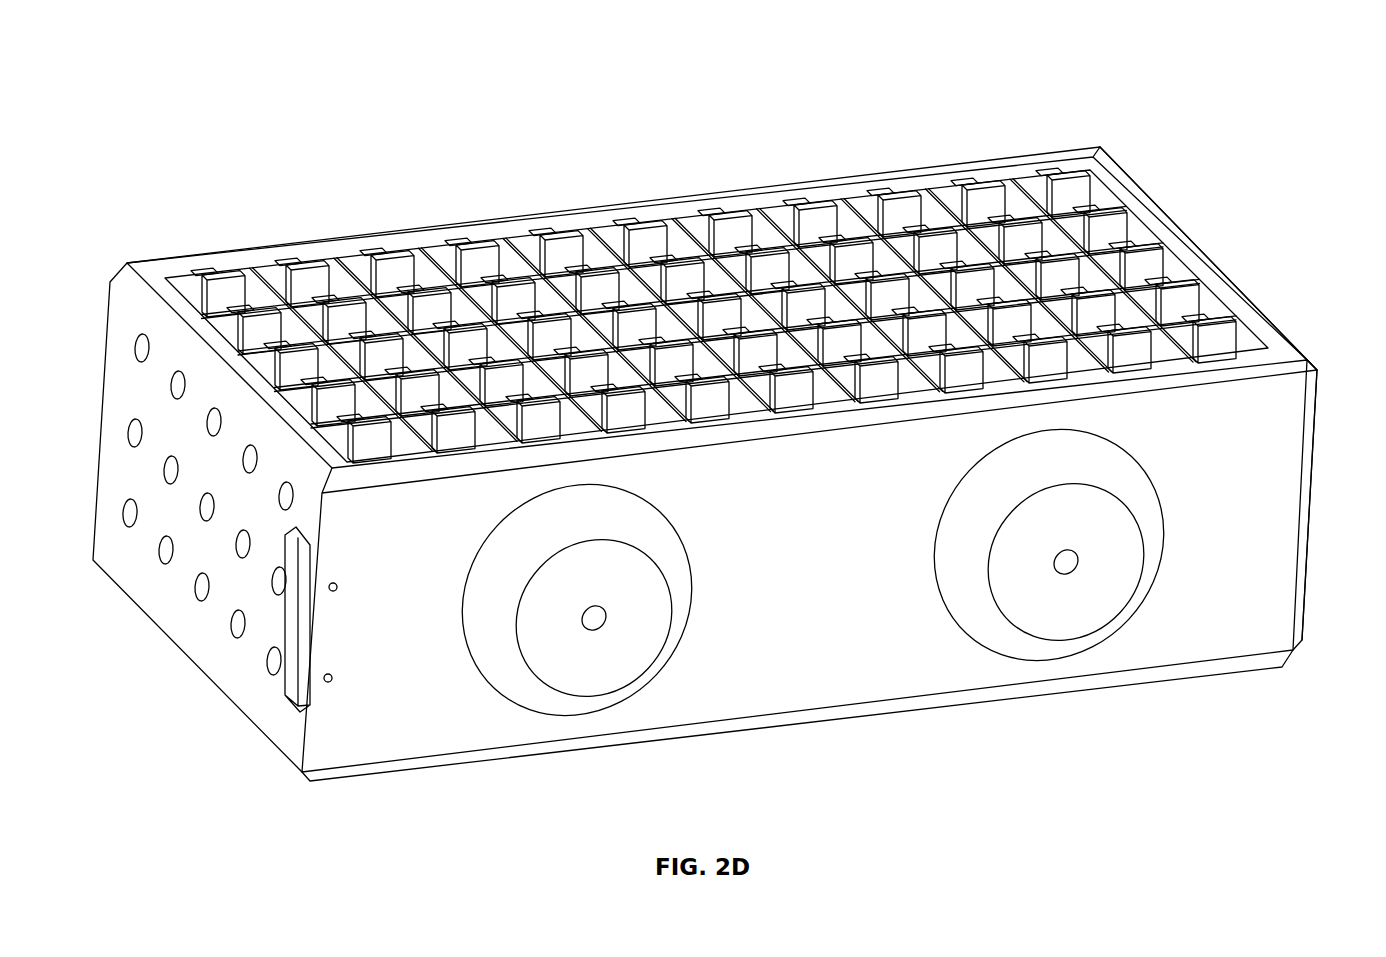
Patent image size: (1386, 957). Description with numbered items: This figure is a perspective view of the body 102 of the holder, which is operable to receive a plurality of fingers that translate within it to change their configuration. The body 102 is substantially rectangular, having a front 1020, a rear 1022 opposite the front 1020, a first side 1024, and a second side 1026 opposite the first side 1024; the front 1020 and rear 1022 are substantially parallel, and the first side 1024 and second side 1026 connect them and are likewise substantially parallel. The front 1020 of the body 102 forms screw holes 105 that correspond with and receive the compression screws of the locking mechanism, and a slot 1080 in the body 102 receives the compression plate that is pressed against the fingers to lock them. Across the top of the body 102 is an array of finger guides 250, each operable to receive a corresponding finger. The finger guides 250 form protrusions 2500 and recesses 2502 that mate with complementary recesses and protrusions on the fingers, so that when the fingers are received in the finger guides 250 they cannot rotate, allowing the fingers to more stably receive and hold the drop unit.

The body 102 is at (1240, 245).
The screw holes 105 is at (606, 619).
The finger guides 250 is at (568, 245).
The protrusions 2500 is at (958, 190).
The recesses 2502 is at (1045, 110).
The front 1020 is at (1270, 566).
The rear 1022 is at (357, 235).
The first side 1024 is at (125, 378).
The second side 1026 is at (1265, 311).
The slot 1080 is at (297, 626).